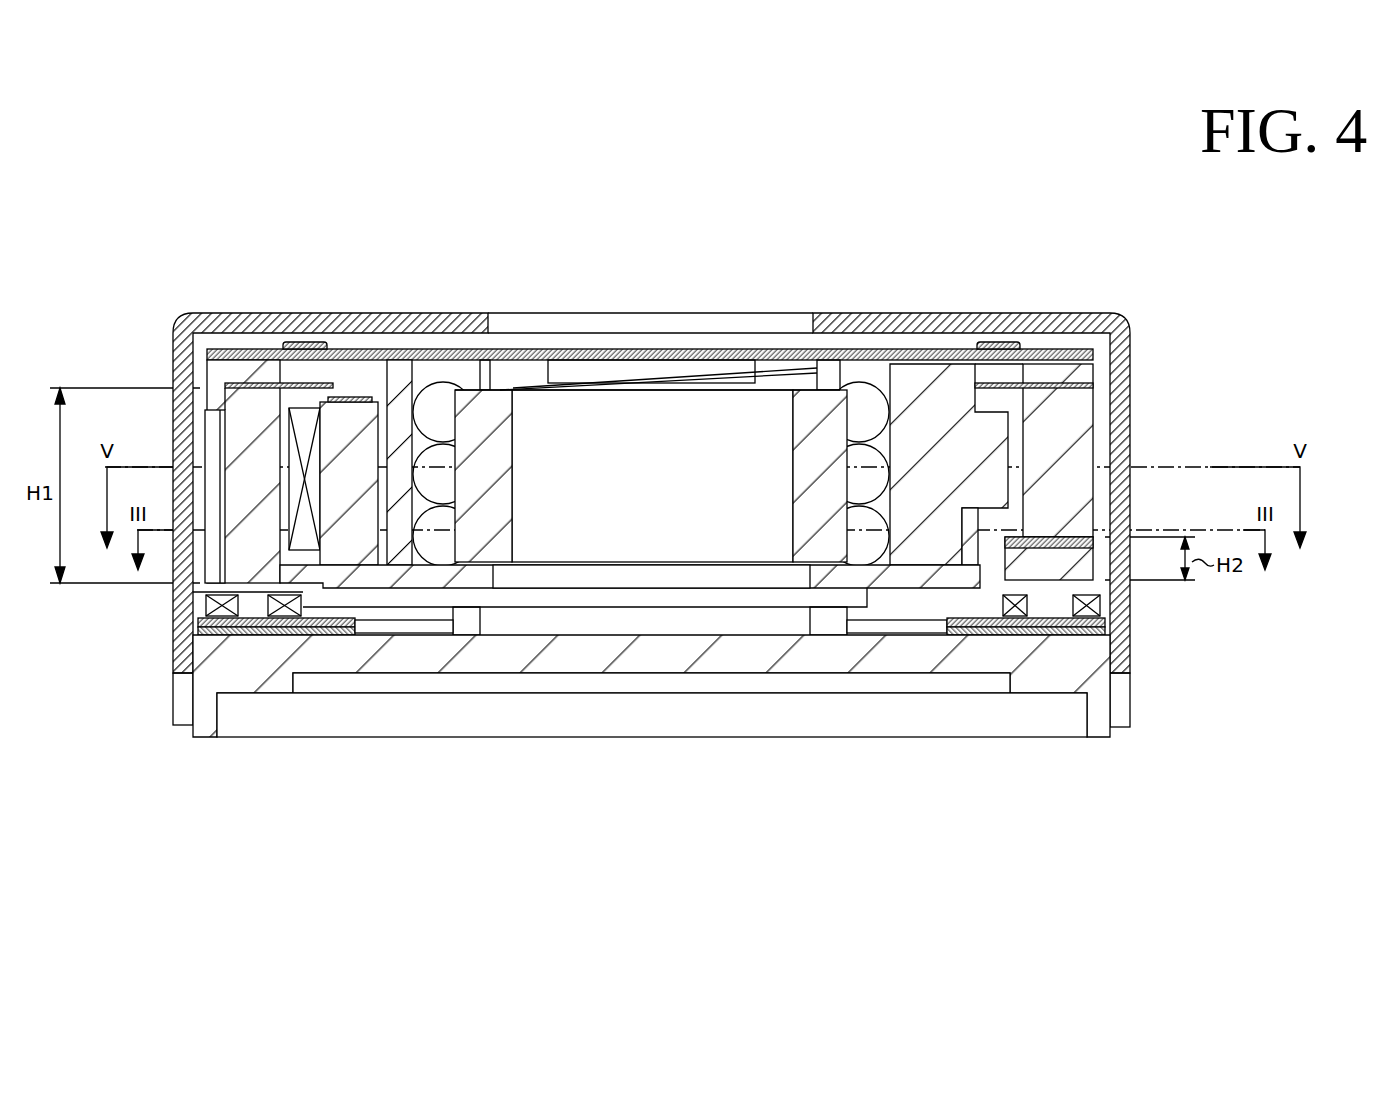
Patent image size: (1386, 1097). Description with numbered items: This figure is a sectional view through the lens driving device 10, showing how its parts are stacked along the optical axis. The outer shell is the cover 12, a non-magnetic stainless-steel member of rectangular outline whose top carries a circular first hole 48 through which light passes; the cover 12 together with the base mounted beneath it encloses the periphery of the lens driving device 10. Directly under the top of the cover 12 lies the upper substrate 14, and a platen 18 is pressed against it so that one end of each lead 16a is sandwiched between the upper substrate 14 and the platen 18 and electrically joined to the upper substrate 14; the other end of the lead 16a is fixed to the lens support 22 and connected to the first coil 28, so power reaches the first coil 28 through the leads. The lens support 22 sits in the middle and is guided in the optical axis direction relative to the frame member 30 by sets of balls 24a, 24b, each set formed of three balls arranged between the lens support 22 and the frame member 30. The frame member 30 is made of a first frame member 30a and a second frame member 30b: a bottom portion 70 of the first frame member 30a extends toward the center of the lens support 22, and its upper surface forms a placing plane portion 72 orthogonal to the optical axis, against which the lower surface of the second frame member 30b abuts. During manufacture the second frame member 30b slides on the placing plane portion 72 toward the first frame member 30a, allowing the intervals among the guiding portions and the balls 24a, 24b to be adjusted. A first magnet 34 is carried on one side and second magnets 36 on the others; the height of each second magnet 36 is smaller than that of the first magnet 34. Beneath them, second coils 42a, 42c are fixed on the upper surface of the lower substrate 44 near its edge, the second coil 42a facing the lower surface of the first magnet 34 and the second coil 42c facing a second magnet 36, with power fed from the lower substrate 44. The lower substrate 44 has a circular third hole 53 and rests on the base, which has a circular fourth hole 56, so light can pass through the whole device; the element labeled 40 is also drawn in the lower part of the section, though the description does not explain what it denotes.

The lens driving device 10 is at (1185, 270).
The cover 12 is at (425, 322).
The upper substrate 14 is at (867, 348).
The lead 16a is at (713, 370).
The platen 18 is at (1060, 365).
The lens support 22 is at (808, 428).
The set of balls 24a is at (452, 478).
The set of balls 24b is at (858, 479).
The first coil 28 is at (307, 420).
The frame member 30 is at (990, 376).
The first frame member 30a is at (1088, 416).
The second frame member 30b is at (933, 380).
The first magnet 34 is at (247, 427).
The second magnet 36 is at (1095, 560).
The base plate 40 is at (1023, 650).
The second coil 42a is at (205, 607).
The second coil 42c is at (1090, 605).
The lower substrate 44 is at (1105, 630).
The first hole 48 is at (490, 318).
The third hole 53 is at (367, 650).
The fourth hole 56 is at (477, 660).
The bottom portion 70 is at (877, 580).
The placing plane portion 72 is at (940, 555).